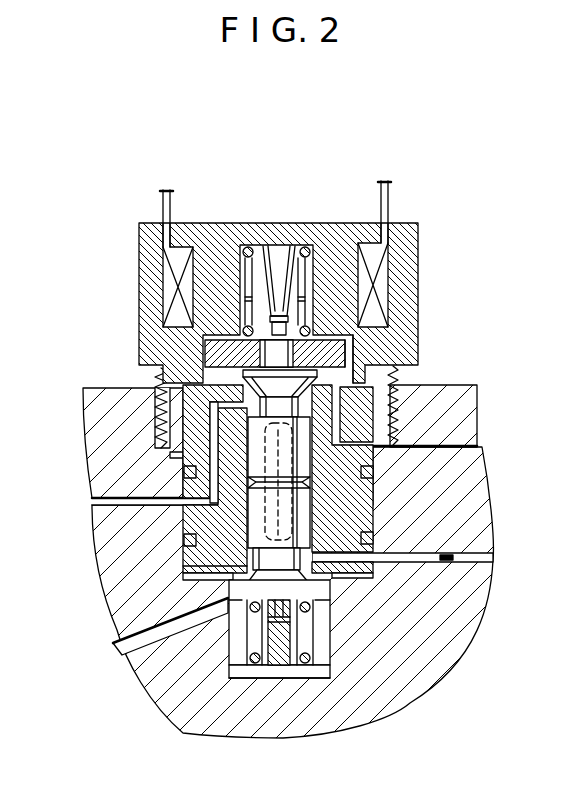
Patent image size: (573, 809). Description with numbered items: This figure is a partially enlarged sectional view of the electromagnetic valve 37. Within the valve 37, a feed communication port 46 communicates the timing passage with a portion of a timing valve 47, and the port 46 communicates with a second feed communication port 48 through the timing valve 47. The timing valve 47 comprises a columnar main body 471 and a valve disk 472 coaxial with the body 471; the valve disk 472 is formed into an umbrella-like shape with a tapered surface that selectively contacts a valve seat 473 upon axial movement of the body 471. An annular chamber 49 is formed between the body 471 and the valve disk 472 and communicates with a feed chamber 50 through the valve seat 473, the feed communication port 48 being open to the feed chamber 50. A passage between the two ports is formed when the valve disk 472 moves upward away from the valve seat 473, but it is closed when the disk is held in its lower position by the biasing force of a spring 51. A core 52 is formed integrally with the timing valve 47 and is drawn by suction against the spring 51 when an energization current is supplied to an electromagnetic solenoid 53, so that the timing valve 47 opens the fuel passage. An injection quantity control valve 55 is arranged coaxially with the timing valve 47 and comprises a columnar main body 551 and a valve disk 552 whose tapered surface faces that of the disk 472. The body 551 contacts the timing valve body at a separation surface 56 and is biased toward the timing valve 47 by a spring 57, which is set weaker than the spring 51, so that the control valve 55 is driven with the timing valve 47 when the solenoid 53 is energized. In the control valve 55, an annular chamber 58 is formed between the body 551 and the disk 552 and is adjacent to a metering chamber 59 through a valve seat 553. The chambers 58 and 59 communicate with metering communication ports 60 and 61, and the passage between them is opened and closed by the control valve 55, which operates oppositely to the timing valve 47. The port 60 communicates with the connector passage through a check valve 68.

The electromagnetic valve 37 is at (429, 271).
The feed communication port 46 is at (102, 502).
The timing valve 47 is at (247, 373).
The columnar main body 471 is at (373, 468).
The valve disk 472 is at (157, 378).
The valve seat 473 is at (345, 357).
The feed communication port 48 is at (335, 408).
The annular chamber 49 is at (247, 405).
The feed chamber 50 is at (342, 378).
The spring 51 is at (303, 247).
The core 52 is at (258, 365).
The electromagnetic solenoid 53 is at (198, 248).
The injection quantity control valve 55 is at (313, 583).
The columnar main body 551 is at (257, 522).
The valve disk 552 is at (278, 632).
The valve seat 553 is at (238, 675).
The separation surface 56 is at (305, 485).
The spring 57 is at (307, 677).
The annular chamber 58 is at (200, 565).
The metering chamber 59 is at (320, 628).
The metering communication port 60 is at (410, 558).
The metering communication port 61 is at (112, 645).
The check valve 68 is at (453, 552).